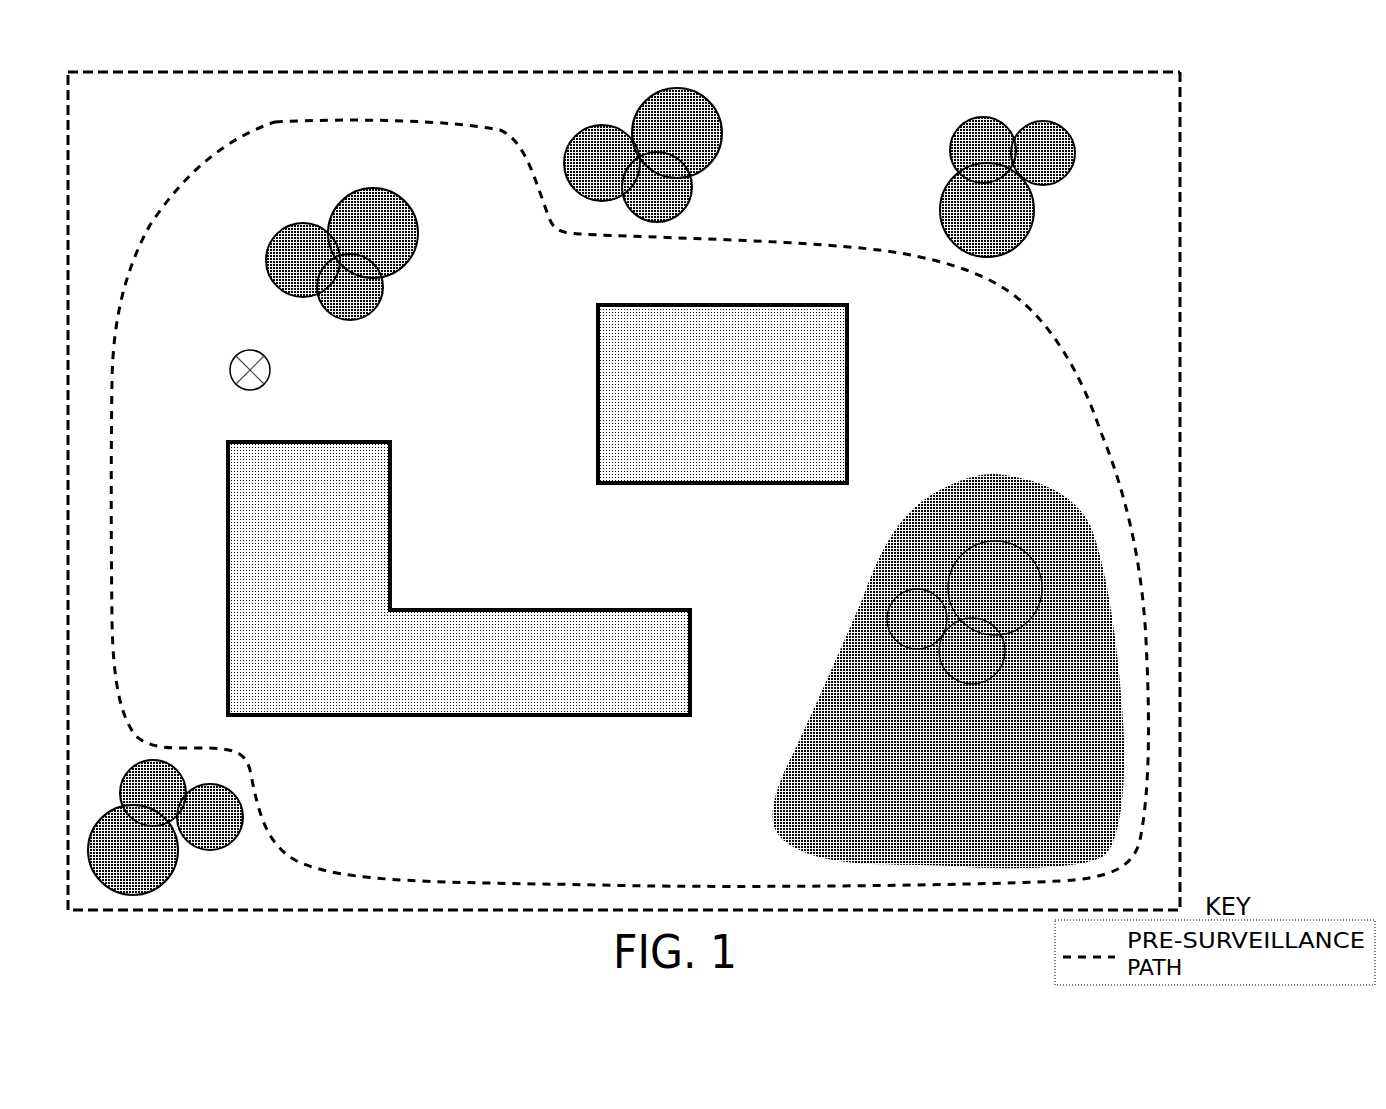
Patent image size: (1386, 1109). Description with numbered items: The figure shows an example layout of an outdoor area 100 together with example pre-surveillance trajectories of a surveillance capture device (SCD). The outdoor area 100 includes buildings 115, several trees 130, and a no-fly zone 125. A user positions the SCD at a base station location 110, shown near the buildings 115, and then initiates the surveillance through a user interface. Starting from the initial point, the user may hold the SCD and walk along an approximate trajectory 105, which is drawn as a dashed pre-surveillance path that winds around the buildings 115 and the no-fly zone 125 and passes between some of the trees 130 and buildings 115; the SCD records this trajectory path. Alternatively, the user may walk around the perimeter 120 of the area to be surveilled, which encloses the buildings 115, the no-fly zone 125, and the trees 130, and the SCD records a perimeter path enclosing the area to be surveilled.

The outdoor area 100 is at (1174, 192).
The trajectory 105 is at (273, 124).
The base station location 110 is at (230, 372).
The buildings 115 is at (309, 440).
The perimeter 120 is at (113, 73).
The no-fly zone 125 is at (995, 472).
The trees 130 is at (593, 132).